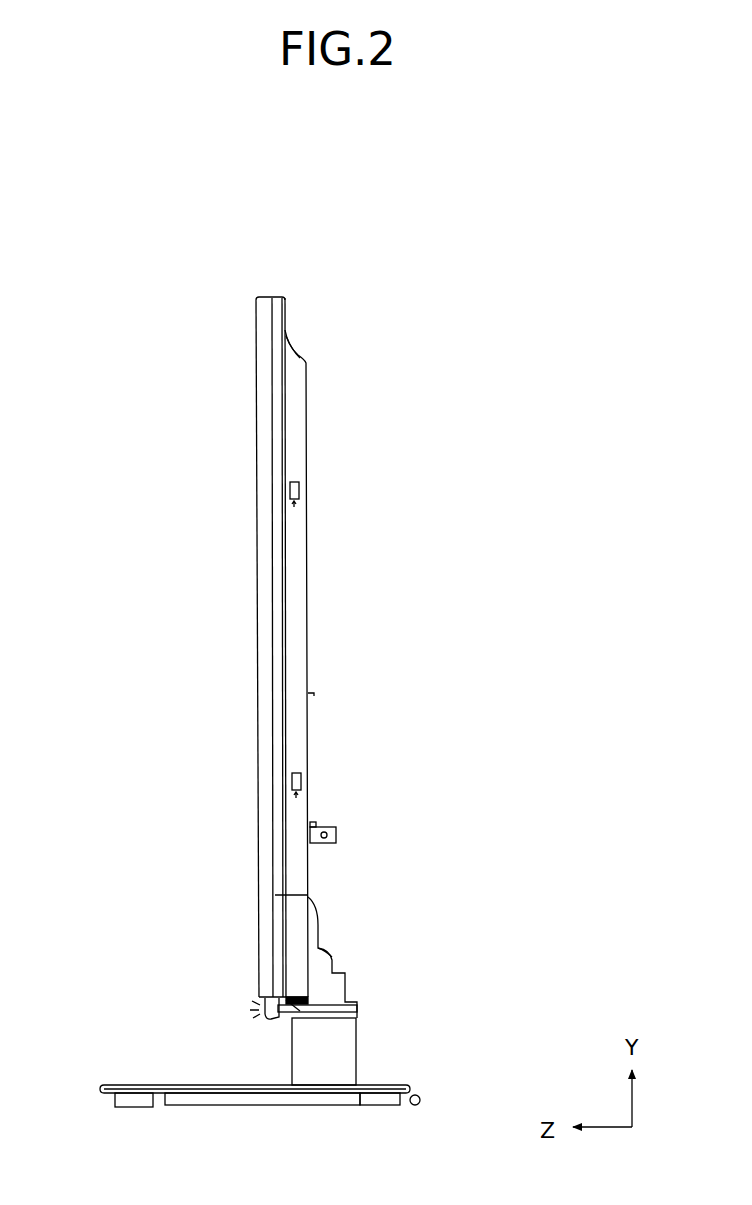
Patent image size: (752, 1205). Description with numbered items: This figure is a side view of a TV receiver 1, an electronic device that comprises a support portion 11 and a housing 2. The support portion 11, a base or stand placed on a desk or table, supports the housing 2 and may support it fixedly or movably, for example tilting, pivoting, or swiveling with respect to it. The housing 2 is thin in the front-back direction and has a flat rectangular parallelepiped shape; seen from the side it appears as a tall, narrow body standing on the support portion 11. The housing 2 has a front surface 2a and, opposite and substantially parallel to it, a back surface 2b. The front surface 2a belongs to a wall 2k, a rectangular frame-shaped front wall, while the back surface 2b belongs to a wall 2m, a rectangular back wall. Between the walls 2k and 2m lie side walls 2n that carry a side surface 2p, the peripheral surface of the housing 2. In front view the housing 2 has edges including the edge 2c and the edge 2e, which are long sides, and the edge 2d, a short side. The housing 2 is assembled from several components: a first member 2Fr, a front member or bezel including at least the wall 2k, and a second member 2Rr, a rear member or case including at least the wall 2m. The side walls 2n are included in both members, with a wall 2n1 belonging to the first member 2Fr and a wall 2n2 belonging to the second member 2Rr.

The TV receiver 1 is at (351, 172).
The housing 2 is at (258, 932).
The front surface 2a is at (195, 648).
The wall 2k is at (256, 315).
The back surface 2b is at (344, 674).
The wall 2m is at (307, 392).
The wall 2n1 is at (160, 608).
The wall 2n2 is at (396, 619).
The walls 2n is at (277, 548).
The edge 2c is at (263, 297).
The edge 2d is at (263, 578).
The side surface 2p is at (282, 297).
The edge 2e is at (266, 1017).
The first member 2Fr is at (258, 711).
The second member 2Rr is at (310, 711).
The support portion 11 is at (360, 1051).